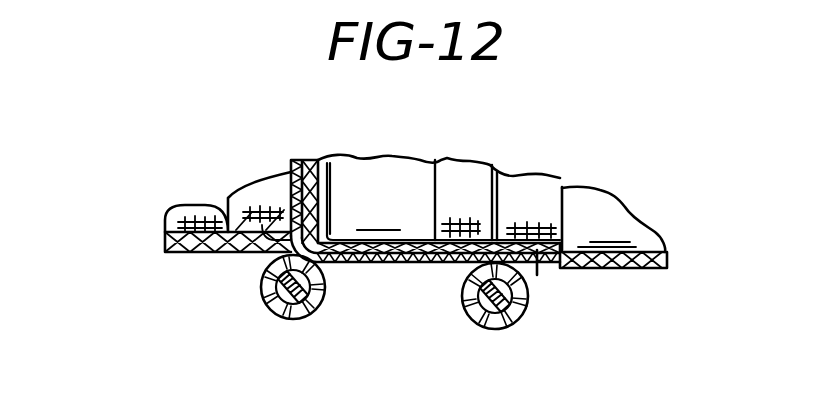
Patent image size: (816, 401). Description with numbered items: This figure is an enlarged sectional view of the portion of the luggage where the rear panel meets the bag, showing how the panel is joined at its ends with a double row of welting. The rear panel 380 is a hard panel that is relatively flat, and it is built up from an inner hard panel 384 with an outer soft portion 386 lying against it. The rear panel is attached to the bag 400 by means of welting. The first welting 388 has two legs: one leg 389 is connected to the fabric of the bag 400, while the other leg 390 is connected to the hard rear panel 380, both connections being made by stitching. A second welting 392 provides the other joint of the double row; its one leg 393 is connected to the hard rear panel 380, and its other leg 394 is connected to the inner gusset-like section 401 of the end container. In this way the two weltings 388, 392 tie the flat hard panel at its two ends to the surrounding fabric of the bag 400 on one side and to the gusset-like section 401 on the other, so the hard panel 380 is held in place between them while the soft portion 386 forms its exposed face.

The rear panel 380 is at (360, 172).
The inner hard panel 384 is at (395, 250).
The outer soft portion 386 is at (392, 263).
The welting 388 is at (285, 320).
The leg 389 is at (207, 212).
The leg 390 is at (290, 180).
The second welting 392 is at (491, 330).
The leg 393 is at (445, 235).
The leg 394 is at (561, 185).
The bag 400 is at (172, 256).
The inner gusset-like section 401 is at (645, 270).